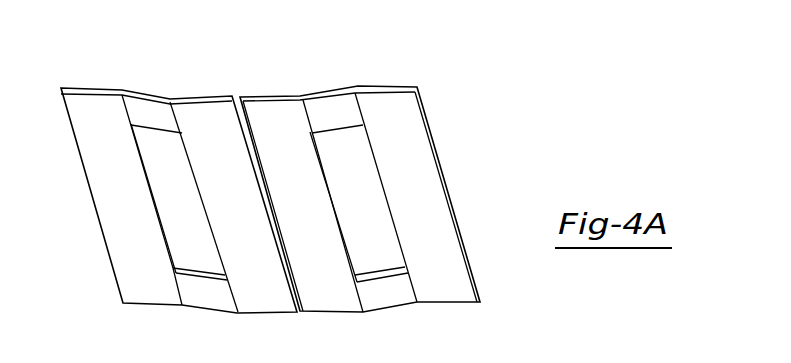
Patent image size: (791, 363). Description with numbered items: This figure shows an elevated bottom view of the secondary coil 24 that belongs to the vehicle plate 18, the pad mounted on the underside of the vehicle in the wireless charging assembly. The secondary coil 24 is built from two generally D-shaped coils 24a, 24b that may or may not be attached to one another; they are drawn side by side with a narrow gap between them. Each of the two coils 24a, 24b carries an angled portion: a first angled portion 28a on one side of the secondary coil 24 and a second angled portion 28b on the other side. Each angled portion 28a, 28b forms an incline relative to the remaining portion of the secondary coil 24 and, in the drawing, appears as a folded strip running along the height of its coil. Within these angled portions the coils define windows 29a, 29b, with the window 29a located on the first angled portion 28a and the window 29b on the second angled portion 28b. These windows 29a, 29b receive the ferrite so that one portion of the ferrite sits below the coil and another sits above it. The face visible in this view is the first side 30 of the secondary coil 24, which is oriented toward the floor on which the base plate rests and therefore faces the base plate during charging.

The vehicle plate 18 is at (375, 63).
The secondary coil 24 is at (238, 41).
The D-shaped coil 24a is at (86, 88).
The D-shaped coil 24b is at (427, 125).
The first angled portion 28a is at (142, 96).
The second angled portion 28b is at (331, 93).
The window 29a is at (173, 202).
The window 29b is at (347, 182).
The first side 30 is at (450, 288).